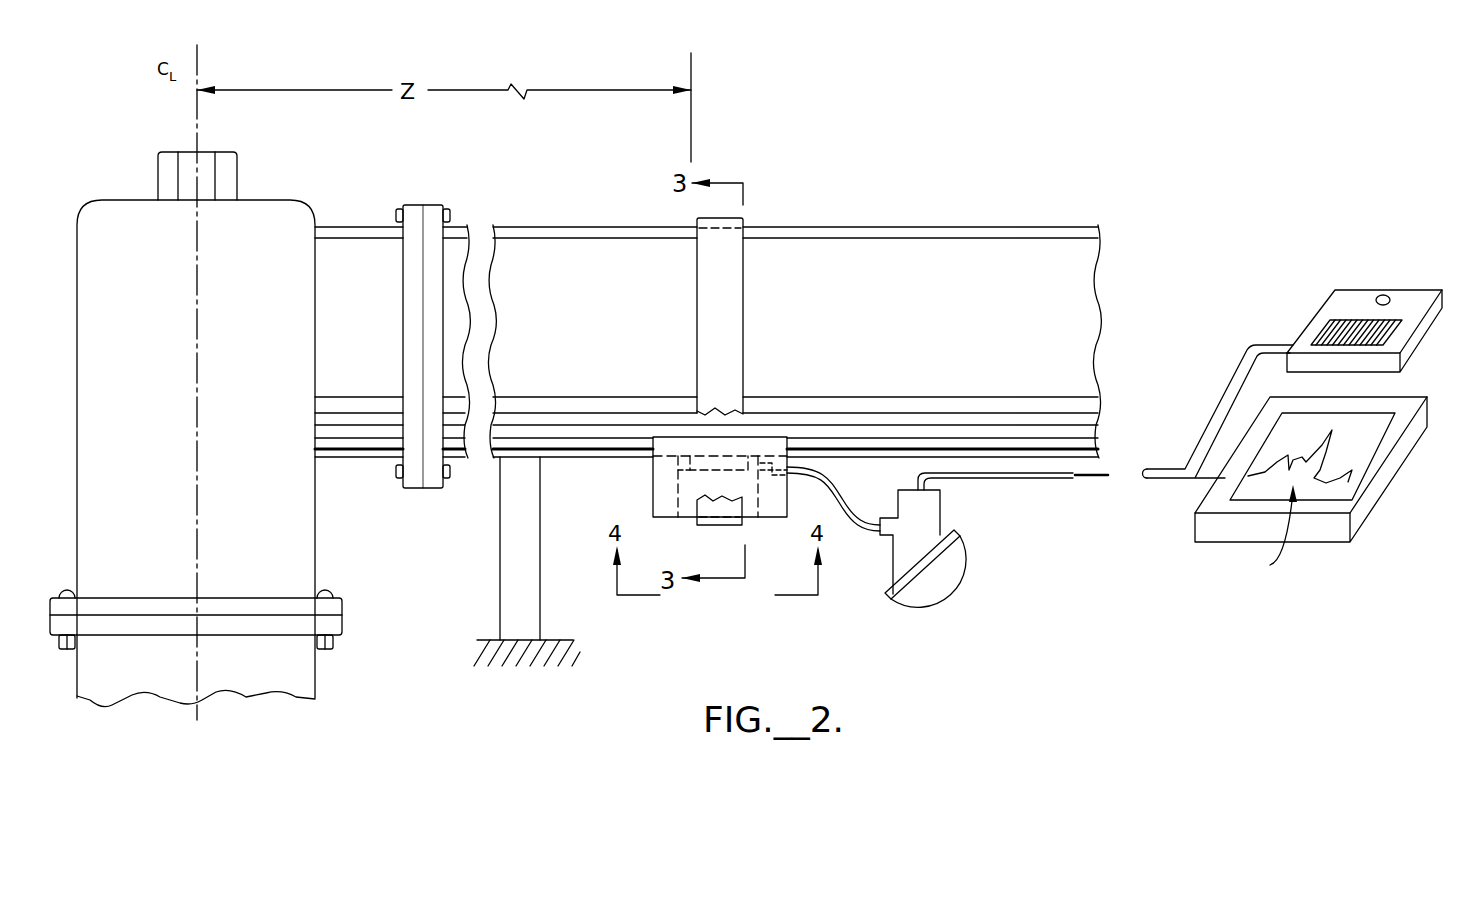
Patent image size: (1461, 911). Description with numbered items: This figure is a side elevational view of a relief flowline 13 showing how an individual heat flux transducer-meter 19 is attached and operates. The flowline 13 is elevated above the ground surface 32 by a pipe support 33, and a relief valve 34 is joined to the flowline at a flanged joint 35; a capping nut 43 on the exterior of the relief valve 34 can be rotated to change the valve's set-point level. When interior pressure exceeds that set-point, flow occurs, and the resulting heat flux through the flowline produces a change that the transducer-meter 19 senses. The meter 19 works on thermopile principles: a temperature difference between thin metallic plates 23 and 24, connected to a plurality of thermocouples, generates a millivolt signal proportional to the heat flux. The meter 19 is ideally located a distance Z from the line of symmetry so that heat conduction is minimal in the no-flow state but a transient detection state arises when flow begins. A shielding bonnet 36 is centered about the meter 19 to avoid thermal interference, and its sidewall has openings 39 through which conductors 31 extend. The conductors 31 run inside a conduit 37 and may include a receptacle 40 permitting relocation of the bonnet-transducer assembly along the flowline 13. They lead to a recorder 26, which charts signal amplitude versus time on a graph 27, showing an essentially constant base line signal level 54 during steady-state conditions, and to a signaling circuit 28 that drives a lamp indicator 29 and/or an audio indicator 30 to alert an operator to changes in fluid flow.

The relief flowline 13 is at (563, 258).
The heat flux transducer-meter 19 is at (706, 462).
The thin metallic plate 23 is at (725, 458).
The thin metallic plate 24 is at (690, 476).
The recorder 26 is at (1390, 484).
The graph 27 is at (1268, 533).
The signaling circuit 28 is at (1374, 300).
The lamp indicator 29 is at (1385, 294).
The audio indicator 30 is at (1393, 327).
The conductors 31 is at (1096, 481).
The ground surface 32 is at (557, 638).
The pipe support 33 is at (532, 565).
The relief valve 34 is at (288, 511).
The flanged joint 35 is at (413, 214).
The shielding bonnet 36 is at (770, 505).
The conduit 37 is at (1043, 480).
The openings 39 is at (727, 265).
The receptacle 40 is at (908, 535).
The capping nut 43 is at (218, 174).
The base line signal level 54 is at (1318, 477).